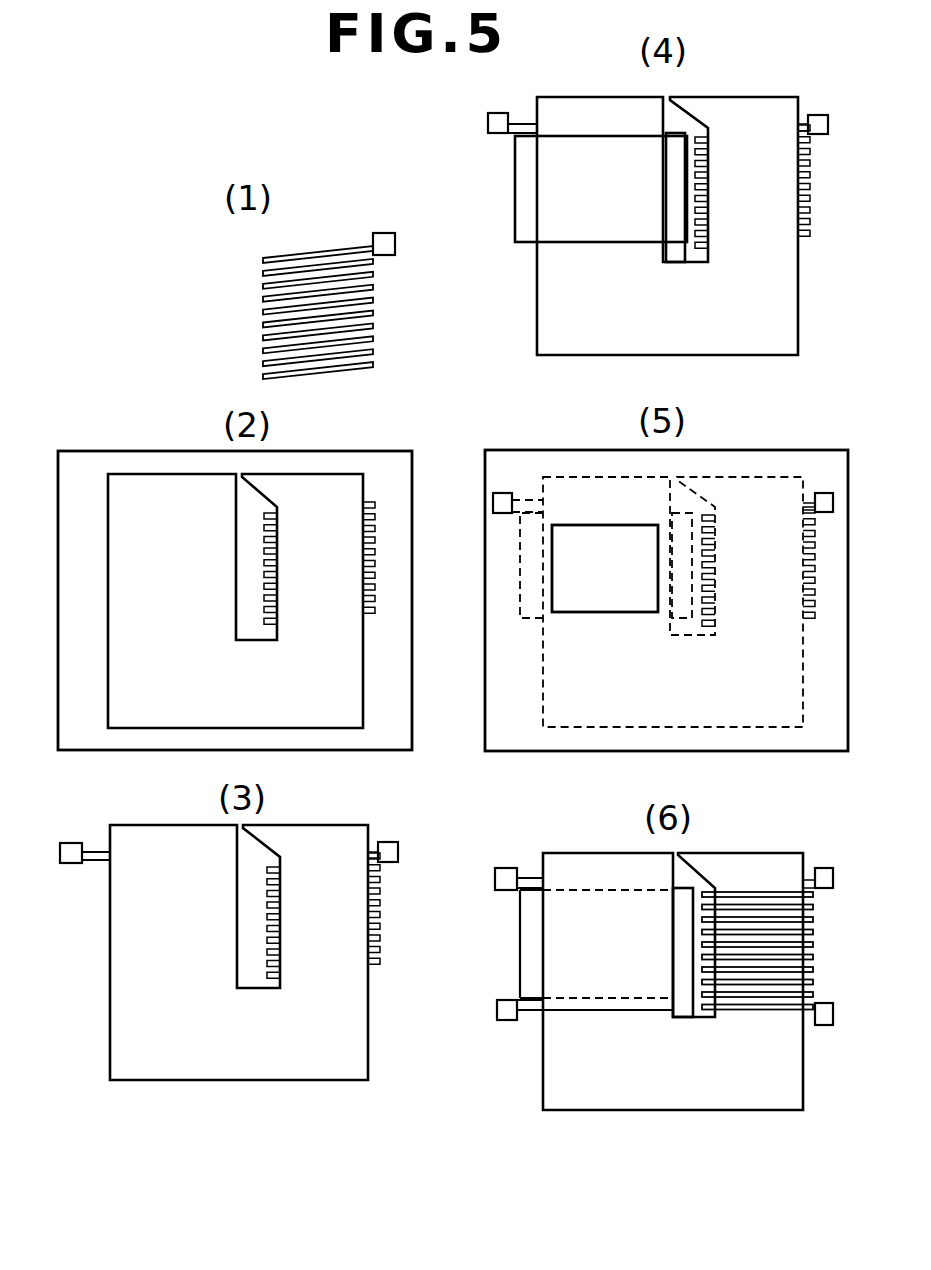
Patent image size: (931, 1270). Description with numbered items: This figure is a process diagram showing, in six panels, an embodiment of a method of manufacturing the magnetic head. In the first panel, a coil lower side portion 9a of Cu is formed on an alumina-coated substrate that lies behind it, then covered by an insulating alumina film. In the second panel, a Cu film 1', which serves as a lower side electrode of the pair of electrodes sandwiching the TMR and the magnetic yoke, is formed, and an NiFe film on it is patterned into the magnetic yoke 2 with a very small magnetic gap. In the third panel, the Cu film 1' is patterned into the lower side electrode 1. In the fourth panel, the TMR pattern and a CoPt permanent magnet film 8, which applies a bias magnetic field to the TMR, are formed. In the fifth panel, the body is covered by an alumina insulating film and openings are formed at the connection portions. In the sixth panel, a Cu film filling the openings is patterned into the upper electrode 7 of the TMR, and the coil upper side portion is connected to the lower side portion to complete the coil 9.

The coil lower side portion 9a is at (378, 300).
The Cu film 1' is at (258, 600).
The magnetic yoke 2 is at (352, 713).
The lower side electrode 1 is at (85, 876).
The permanent magnet film 8 is at (525, 235).
The tunnel magnetoresistive element TMR is at (595, 228).
The coil 9 is at (813, 945).
The upper electrode 7 is at (507, 1020).